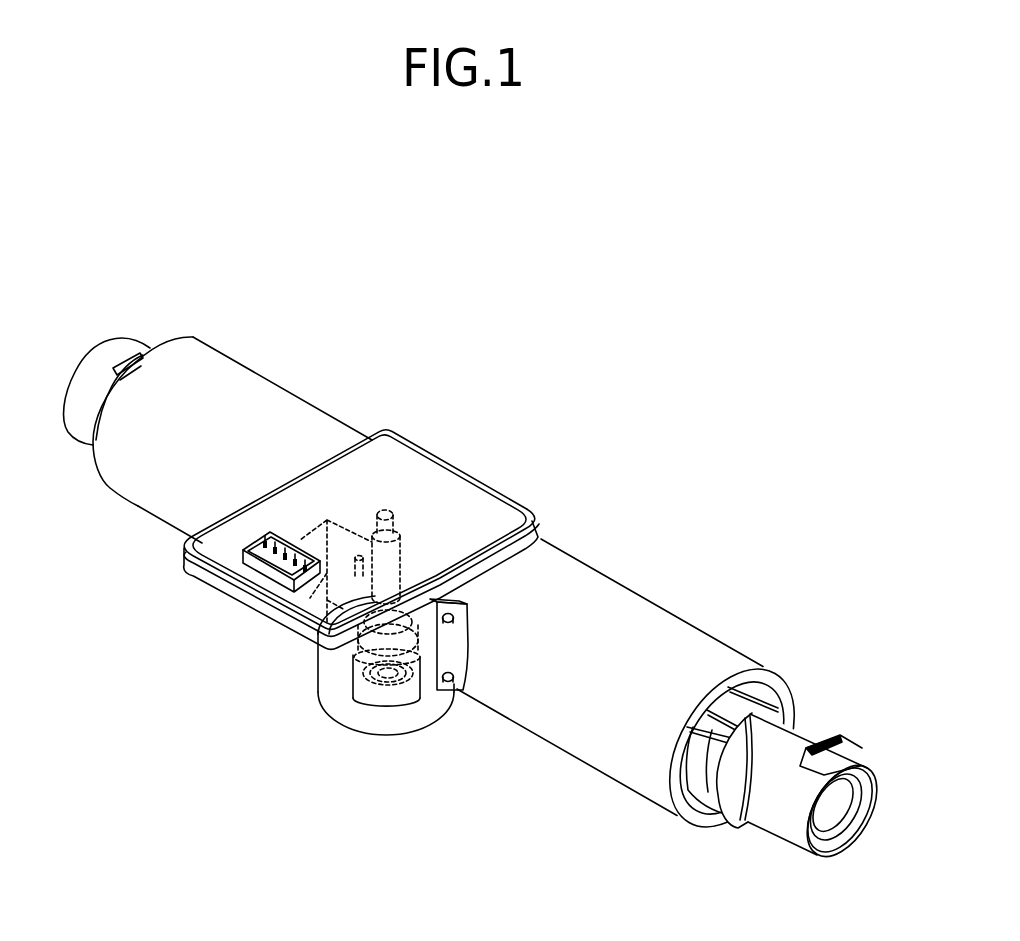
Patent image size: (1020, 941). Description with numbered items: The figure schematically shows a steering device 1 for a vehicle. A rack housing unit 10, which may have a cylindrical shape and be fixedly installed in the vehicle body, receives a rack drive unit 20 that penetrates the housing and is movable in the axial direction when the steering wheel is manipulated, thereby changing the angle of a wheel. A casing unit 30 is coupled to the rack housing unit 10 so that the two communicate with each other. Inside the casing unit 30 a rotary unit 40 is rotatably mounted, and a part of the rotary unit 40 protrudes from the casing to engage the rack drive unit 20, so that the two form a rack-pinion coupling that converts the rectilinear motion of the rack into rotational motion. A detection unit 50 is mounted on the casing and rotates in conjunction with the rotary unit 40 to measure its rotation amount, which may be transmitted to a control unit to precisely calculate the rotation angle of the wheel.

The steering device 1 is at (846, 255).
The rack housing unit 10 is at (642, 618).
The rack drive unit 20 is at (803, 741).
The casing unit 30 is at (375, 723).
The rotary unit 40 is at (368, 667).
The detection unit 50 is at (415, 465).